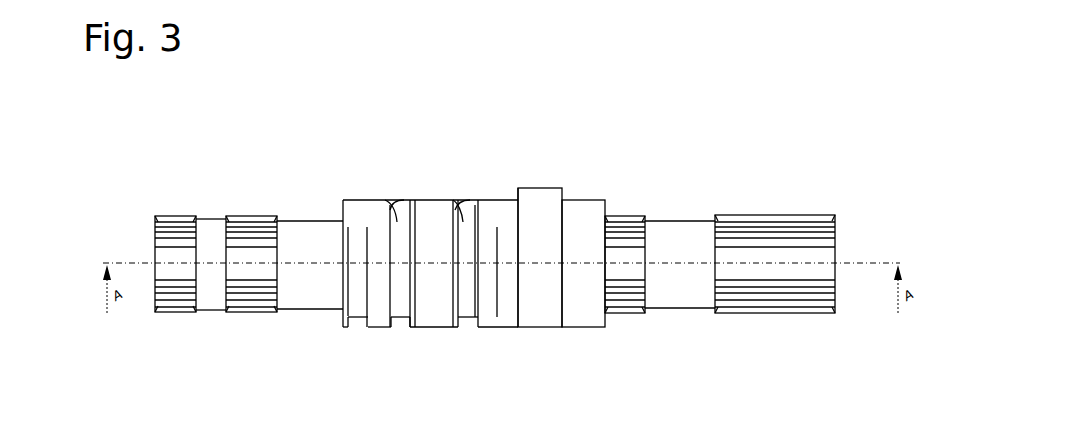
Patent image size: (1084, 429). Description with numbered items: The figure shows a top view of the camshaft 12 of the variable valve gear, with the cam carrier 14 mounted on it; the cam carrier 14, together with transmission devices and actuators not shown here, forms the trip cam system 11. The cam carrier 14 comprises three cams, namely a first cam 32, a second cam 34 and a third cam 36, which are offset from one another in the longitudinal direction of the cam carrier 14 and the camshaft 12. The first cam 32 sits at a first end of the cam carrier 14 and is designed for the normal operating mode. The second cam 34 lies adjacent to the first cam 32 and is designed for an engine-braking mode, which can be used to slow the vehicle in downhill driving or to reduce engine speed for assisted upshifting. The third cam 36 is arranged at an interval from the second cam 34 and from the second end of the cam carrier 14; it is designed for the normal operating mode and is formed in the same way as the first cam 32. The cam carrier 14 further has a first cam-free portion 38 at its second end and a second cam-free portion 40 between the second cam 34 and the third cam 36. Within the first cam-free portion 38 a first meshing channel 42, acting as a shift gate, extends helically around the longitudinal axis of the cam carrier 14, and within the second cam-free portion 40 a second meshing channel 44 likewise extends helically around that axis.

The trip cam system 11 is at (315, 183).
The camshaft 12 is at (160, 217).
The cam carrier 14 is at (607, 338).
The first cam 32 is at (585, 218).
The second cam 34 is at (540, 197).
The third cam 36 is at (438, 203).
The first cam-free portion 38 is at (357, 185).
The second cam-free portion 40 is at (477, 180).
The first meshing channel (shift gate) 42 is at (398, 280).
The second meshing channel (shift gate) 44 is at (507, 293).